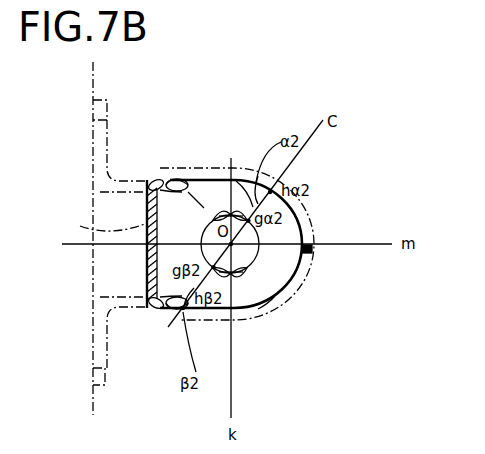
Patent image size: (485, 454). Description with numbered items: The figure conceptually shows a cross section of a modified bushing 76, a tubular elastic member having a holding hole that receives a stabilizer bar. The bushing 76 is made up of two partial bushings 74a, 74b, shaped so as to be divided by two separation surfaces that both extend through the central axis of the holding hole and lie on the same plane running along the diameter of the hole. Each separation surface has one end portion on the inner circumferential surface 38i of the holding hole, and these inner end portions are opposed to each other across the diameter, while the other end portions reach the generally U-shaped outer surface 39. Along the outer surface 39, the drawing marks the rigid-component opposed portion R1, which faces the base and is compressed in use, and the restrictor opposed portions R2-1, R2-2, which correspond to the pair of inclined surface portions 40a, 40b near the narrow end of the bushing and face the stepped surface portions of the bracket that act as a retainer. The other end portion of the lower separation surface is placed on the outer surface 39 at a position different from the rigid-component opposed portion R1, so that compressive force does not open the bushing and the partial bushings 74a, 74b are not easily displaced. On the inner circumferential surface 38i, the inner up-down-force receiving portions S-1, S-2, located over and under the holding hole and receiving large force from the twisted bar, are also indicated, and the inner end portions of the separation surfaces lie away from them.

The inner circumferential surface 38i is at (300, 223).
The outer surface 39 is at (308, 278).
The bushing 76 is at (312, 250).
The inclined surface portion 40a is at (177, 179).
The inclined surface portion 40b is at (152, 290).
The partial bushing 74a is at (286, 300).
The partial bushing 74b is at (194, 193).
The rigid-component opposed portion R1 is at (89, 227).
The restrictor opposed portion R2-1 is at (152, 179).
The restrictor opposed portion R2-2 is at (141, 314).
The inner up-down-force receiving portion S-1 is at (237, 205).
The inner up-down-force receiving portion S-2 is at (240, 282).